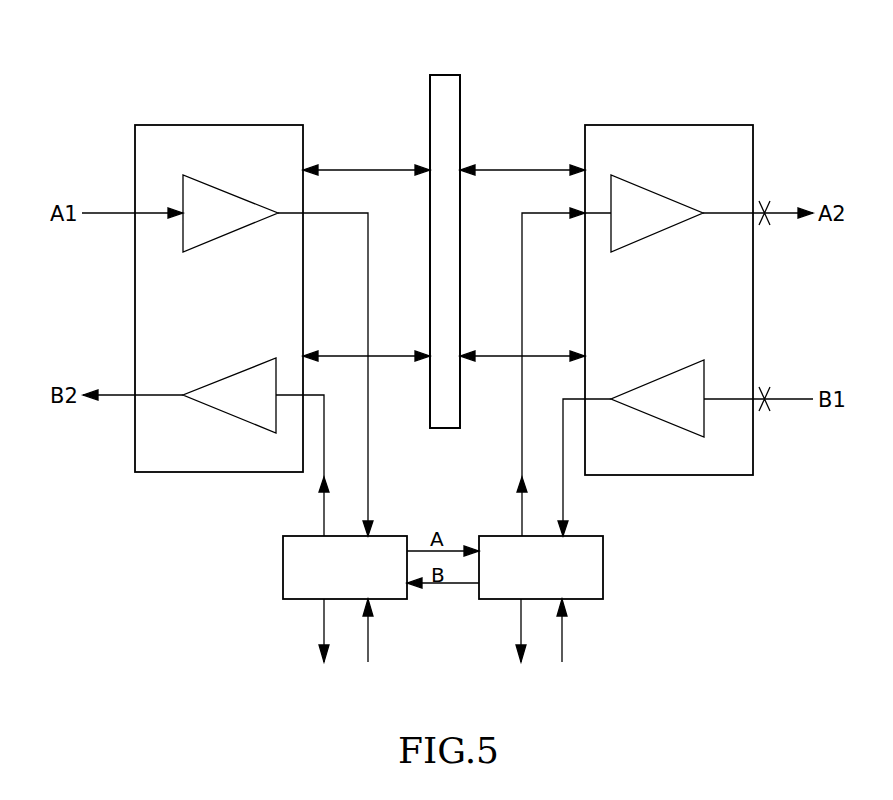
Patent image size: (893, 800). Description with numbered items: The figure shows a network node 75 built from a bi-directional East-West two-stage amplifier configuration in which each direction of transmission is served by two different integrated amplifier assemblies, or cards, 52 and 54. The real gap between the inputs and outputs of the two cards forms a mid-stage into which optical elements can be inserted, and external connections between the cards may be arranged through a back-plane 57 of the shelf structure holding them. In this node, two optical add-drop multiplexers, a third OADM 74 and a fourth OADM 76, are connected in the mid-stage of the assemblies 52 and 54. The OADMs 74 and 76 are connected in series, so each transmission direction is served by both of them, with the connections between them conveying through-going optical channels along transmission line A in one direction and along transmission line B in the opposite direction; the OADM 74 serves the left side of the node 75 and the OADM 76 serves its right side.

The integrated amplifier assembly 52 is at (668, 125).
The integrated amplifier assembly 54 is at (215, 125).
The back-plane 57 is at (440, 75).
The OADM3 74 is at (283, 566).
The network node 75 is at (682, 32).
The OADM4 76 is at (576, 536).